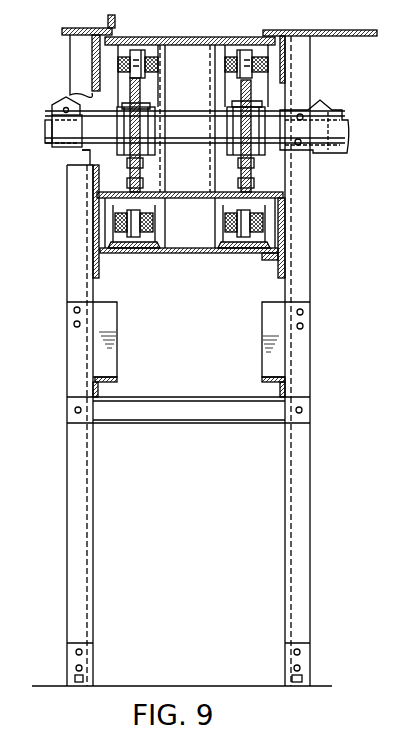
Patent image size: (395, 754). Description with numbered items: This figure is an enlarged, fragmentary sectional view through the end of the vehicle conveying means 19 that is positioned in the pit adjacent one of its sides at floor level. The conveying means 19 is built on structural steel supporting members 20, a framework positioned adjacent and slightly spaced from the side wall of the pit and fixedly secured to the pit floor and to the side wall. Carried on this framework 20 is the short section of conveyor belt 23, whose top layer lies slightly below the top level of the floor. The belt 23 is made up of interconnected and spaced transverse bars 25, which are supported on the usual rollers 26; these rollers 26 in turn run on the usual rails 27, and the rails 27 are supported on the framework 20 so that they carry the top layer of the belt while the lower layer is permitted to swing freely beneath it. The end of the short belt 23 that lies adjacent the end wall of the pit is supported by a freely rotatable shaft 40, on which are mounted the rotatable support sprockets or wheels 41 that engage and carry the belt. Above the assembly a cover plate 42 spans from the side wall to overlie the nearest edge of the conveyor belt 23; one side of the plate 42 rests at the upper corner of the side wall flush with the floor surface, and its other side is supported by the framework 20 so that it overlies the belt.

The conveying means 19 is at (64, 267).
The structural steel supporting members 20 is at (80, 440).
The short section of conveyor belt 23 is at (263, 25).
The transverse bars 25 is at (200, 37).
The rollers 26 is at (250, 45).
The rails 27 is at (141, 88).
The freely rotatable shaft 40 is at (93, 138).
The support sprockets or wheels 41 is at (137, 160).
The cover plate 42 is at (362, 37).